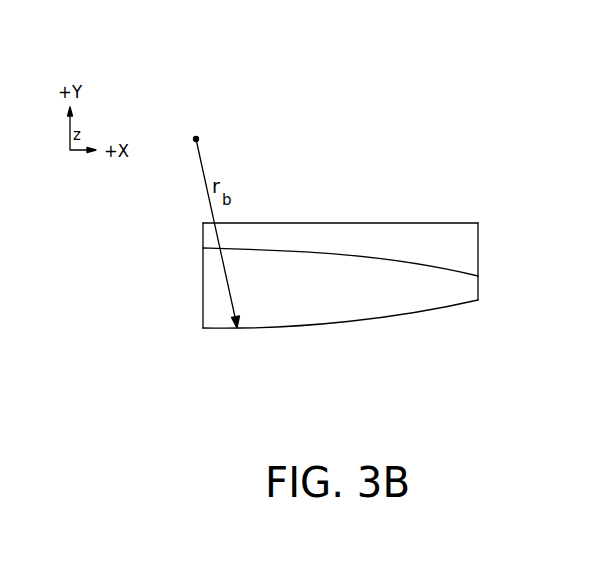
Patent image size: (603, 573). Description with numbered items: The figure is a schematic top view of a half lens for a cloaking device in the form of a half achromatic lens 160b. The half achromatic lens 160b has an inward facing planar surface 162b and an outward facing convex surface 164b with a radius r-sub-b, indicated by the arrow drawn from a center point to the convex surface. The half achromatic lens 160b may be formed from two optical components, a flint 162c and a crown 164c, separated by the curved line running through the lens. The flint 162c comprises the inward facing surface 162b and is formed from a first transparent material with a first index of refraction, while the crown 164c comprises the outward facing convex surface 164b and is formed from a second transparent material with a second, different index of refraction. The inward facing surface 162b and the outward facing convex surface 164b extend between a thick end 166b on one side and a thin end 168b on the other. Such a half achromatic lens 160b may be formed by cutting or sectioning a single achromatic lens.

The half achromatic lens 160b is at (339, 211).
The inward facing planar surface 162b is at (392, 222).
The flint 162c is at (470, 233).
The outward facing convex surface 164b is at (311, 327).
The crown 164c is at (437, 303).
The thick end 166b is at (201, 278).
The thin end 168b is at (478, 276).